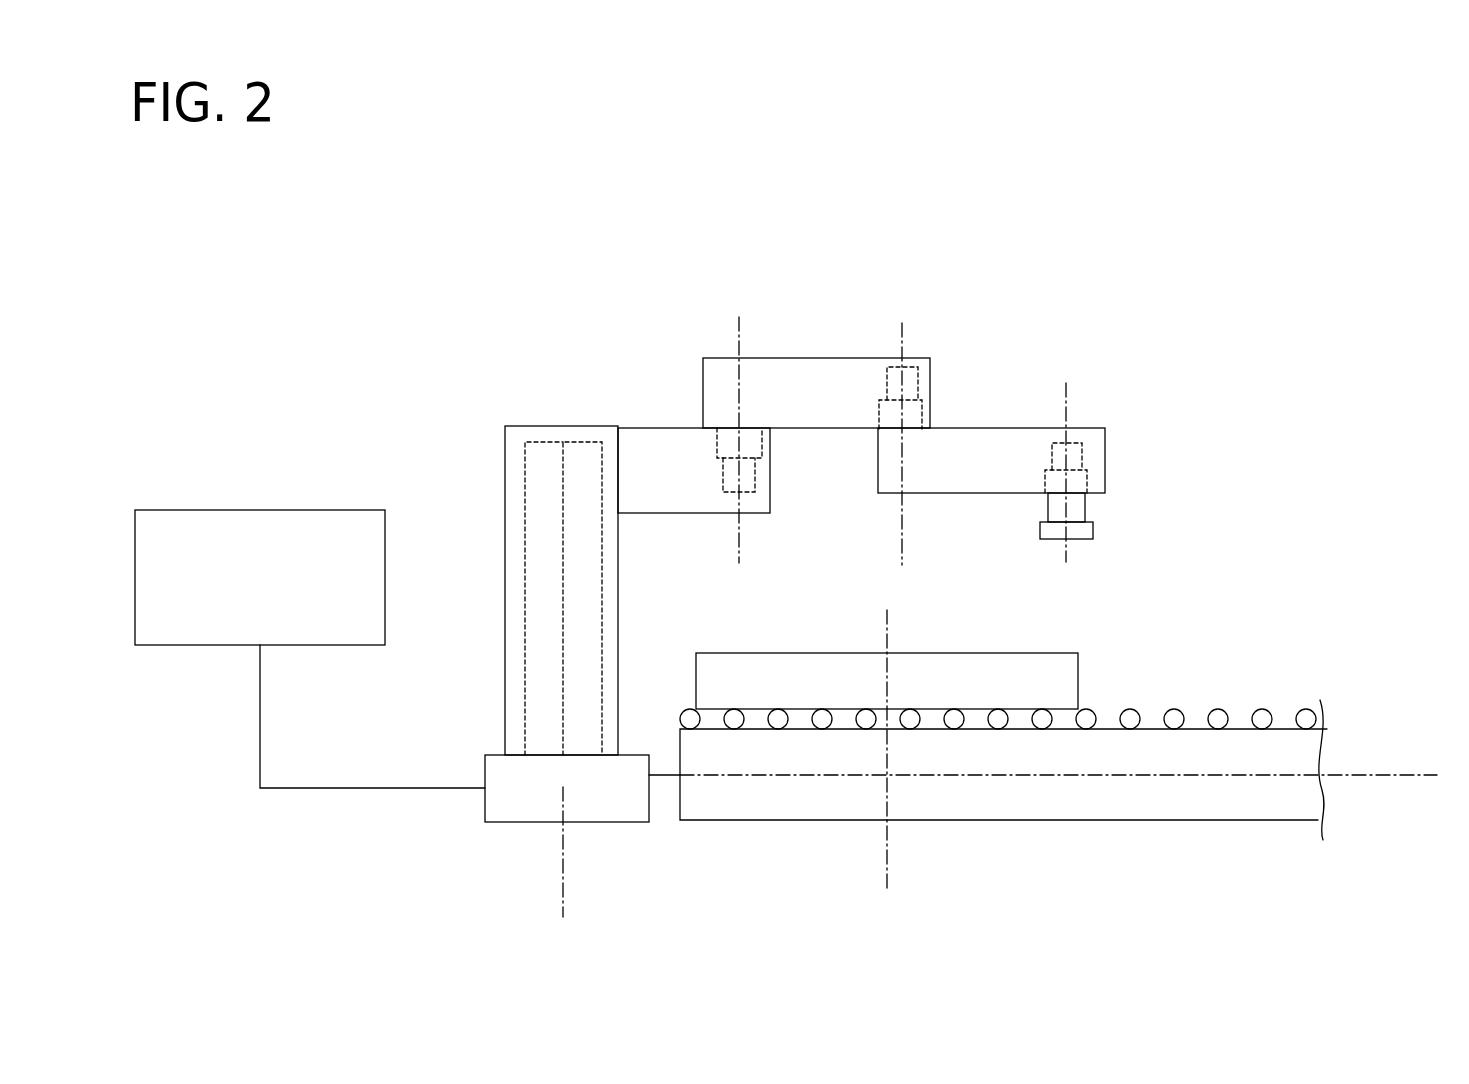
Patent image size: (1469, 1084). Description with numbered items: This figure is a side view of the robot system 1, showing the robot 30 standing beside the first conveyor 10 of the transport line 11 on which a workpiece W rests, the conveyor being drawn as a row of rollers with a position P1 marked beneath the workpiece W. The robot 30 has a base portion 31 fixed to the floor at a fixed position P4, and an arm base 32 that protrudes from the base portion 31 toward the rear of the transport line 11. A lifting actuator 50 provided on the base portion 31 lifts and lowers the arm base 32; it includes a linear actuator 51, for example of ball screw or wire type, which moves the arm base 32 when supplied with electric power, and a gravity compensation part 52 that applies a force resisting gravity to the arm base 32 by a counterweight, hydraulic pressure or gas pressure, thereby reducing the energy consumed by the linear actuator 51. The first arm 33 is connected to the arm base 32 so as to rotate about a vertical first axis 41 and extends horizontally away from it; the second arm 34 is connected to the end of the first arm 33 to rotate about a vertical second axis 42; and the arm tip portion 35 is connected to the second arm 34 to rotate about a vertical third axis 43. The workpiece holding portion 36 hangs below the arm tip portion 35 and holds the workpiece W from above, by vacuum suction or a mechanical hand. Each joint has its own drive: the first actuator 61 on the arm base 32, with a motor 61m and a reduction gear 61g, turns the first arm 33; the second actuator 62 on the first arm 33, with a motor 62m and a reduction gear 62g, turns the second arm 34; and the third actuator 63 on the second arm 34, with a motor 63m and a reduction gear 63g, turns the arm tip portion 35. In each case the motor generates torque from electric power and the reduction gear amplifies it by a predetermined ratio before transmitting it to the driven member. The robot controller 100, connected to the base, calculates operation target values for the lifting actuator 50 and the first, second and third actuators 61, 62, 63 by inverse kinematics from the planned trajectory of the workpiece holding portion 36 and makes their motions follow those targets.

The robot system 1 is at (1258, 311).
The first conveyor 10 is at (1237, 740).
The transport line 11 is at (1383, 775).
The robot 30 is at (470, 312).
The base portion 31 is at (505, 483).
The arm base 32 is at (640, 440).
The first arm 33 is at (778, 362).
The second arm 34 is at (980, 440).
The arm tip portion 35 is at (1085, 508).
The workpiece holding portion 36 is at (1093, 532).
The first axis 41 is at (738, 335).
The second axis 42 is at (902, 545).
The third axis 43 is at (1067, 418).
The lifting actuator 50 is at (583, 767).
The linear actuator 51 is at (575, 440).
The gravity compensation part 52 is at (536, 440).
The first actuator 61 is at (757, 505).
The reduction gear 61g is at (764, 452).
The motor 61m is at (717, 480).
The second actuator 62 is at (892, 369).
The reduction gear 62g is at (878, 413).
The motor 62m is at (922, 375).
The third actuator 63 is at (1068, 435).
The reduction gear 63g is at (1045, 480).
The motor 63m is at (1083, 457).
The robot controller 100 is at (170, 510).
The workpiece W is at (1015, 665).
The first position P1 is at (888, 865).
The fixed position P4 is at (562, 912).